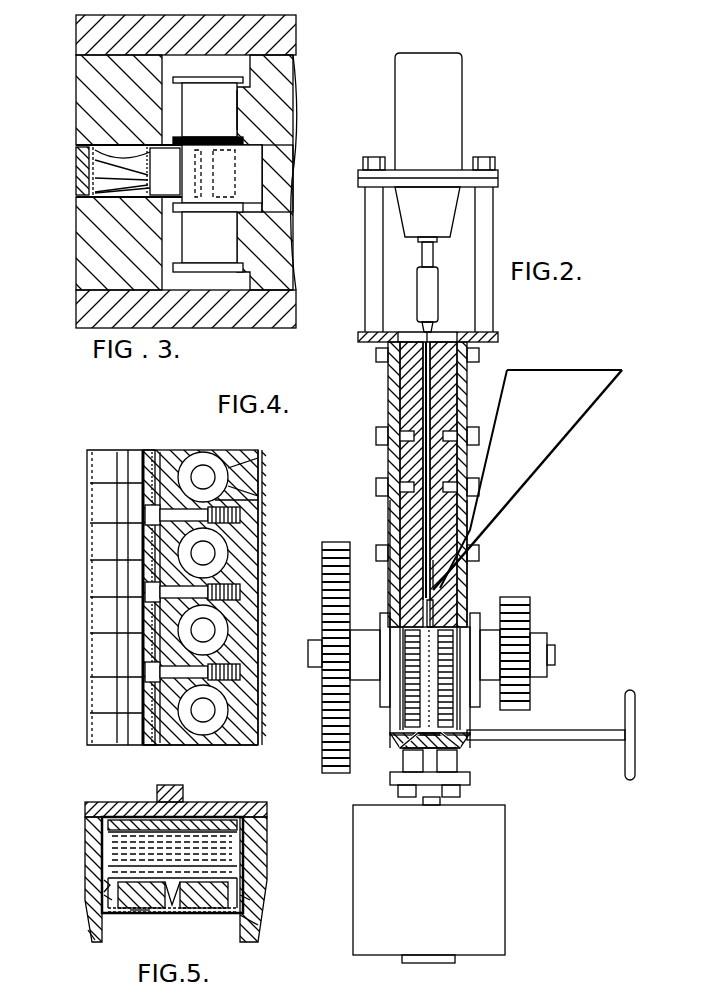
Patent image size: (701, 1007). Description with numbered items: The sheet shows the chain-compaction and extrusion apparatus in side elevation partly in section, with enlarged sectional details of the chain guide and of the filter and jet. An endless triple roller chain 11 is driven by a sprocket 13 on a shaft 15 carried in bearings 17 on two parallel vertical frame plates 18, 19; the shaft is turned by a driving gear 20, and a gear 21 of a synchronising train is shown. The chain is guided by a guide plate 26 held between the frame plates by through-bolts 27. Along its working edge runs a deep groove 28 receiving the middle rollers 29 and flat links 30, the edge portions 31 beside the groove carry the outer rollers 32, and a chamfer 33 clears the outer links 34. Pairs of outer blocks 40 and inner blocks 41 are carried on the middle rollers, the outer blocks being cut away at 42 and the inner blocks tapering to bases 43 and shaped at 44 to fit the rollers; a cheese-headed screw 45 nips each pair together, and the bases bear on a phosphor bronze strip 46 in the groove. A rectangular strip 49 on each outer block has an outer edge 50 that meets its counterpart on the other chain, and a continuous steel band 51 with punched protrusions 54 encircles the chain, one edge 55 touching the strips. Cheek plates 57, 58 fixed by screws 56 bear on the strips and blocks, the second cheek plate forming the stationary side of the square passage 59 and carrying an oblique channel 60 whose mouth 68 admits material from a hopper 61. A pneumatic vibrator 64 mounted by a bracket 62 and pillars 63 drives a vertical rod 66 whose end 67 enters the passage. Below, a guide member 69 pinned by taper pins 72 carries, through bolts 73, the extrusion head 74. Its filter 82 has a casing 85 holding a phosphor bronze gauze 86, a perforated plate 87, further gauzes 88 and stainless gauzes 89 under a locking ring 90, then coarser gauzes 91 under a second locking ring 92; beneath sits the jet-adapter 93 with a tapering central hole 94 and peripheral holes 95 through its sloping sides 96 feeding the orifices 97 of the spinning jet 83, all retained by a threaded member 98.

In FIG. 2, the endless triple roller chain 11 is at (453, 715).
In FIG. 2, the sprocket 13 is at (400, 692).
In FIG. 2, the shaft 15 is at (308, 660).
In FIG. 2, the bearing 17 is at (375, 680).
In FIG. 3, the frame plate 18 is at (280, 42).
In FIG. 2, the frame plate 18 is at (393, 513).
In FIG. 3, the frame plate 19 is at (280, 300).
In FIG. 2, the frame plate 19 is at (465, 567).
In FIG. 2, the driving gear 20 is at (333, 542).
In FIG. 2, the gear 21 is at (530, 620).
In FIG. 3, the guide plate 26 is at (285, 205).
In FIG. 4, the guide plate 26 is at (255, 745).
In FIG. 2, the through-bolt 27 is at (388, 540).
In FIG. 3, the groove 28 is at (283, 225).
In FIG. 4, the groove 28 is at (250, 475).
In FIG. 3, the roller 29 is at (222, 175).
In FIG. 4, the roller 29 is at (250, 490).
In FIG. 3, the flat link 30 is at (243, 142).
In FIG. 4, the flat link 30 is at (250, 508).
In FIG. 3, the guide plate edge 31 is at (237, 128).
In FIG. 3, the outer roller 32 is at (225, 100).
In FIG. 2, the outer roller 32 is at (395, 742).
In FIG. 3, the chamfer 33 is at (245, 72).
In FIG. 3, the outer link 34 is at (245, 268).
In FIG. 4, the outer block 40 is at (180, 452).
In FIG. 4, the inner block 41 is at (243, 455).
In FIG. 4, the cut-away 42 is at (250, 545).
In FIG. 4, the base 43 is at (250, 520).
In FIG. 4, the shaped portion 44 is at (250, 560).
In FIG. 4, the cheese-headed screw 45 is at (262, 620).
In FIG. 3, the phosphor bronze strip 46 is at (270, 160).
In FIG. 4, the phosphor bronze strip 46 is at (262, 725).
In FIG. 3, the rectangular strip 49 is at (90, 135).
In FIG. 4, the rectangular strip 49 is at (180, 440).
In FIG. 2, the rectangular strip 49 is at (410, 748).
In FIG. 4, the outer edge 50 is at (185, 745).
In FIG. 3, the continuous steel band 51 is at (92, 165).
In FIG. 4, the continuous steel band 51 is at (120, 750).
In FIG. 3, the protrusion 54 is at (95, 190).
In FIG. 4, the protrusion 54 is at (128, 452).
In FIG. 2, the protrusion 54 is at (455, 748).
In FIG. 3, the band edge 55 is at (85, 148).
In FIG. 2, the screw 56 is at (388, 486).
In FIG. 3, the cheek plate 57 is at (95, 117).
In FIG. 4, the cheek plate 57 is at (152, 450).
In FIG. 2, the cheek plate 57 is at (400, 398).
In FIG. 3, the cheek plate 58 is at (92, 258).
In FIG. 2, the cheek plate 58 is at (445, 400).
In FIG. 3, the passage 59 is at (163, 171).
In FIG. 2, the passage 59 is at (426, 603).
In FIG. 2, the oblique channel 60 is at (445, 575).
In FIG. 2, the hopper 61 is at (527, 480).
In FIG. 2, the bracket 62 is at (498, 337).
In FIG. 2, the pillar 63 is at (487, 205).
In FIG. 2, the pneumatic vibrator 64 is at (450, 128).
In FIG. 2, the vertical rod 66 is at (465, 368).
In FIG. 2, the rod end 67 is at (420, 590).
In FIG. 2, the mouth 68 is at (470, 594).
In FIG. 2, the guide member 69 is at (462, 748).
In FIG. 2, the taper pin 72 is at (575, 737).
In FIG. 2, the bolt 73 is at (405, 770).
In FIG. 2, the extrusion head 74 is at (490, 862).
In FIG. 5, the filter 82 is at (85, 812).
In FIG. 5, the spinning jet 83 is at (125, 915).
In FIG. 5, the casing 85 is at (104, 828).
In FIG. 5, the phosphor bronze gauze 86 is at (150, 822).
In FIG. 5, the perforated plate 87 is at (245, 826).
In FIG. 5, the gauzes 88 is at (245, 843).
In FIG. 5, the stainless steel gauze 89 is at (104, 862).
In FIG. 5, the locking ring 90 is at (245, 862).
In FIG. 5, the stainless steel gauze 91 is at (110, 883).
In FIG. 5, the locking ring 92 is at (245, 882).
In FIG. 5, the jet-adapter 93 is at (105, 897).
In FIG. 5, the central hole 94 is at (175, 908).
In FIG. 5, the peripheral hole 95 is at (255, 900).
In FIG. 5, the sloping side 96 is at (262, 920).
In FIG. 5, the jet orifice 97 is at (150, 915).
In FIG. 5, the threaded member 98 is at (95, 932).
In FIG. 2, the threaded member 98 is at (455, 960).